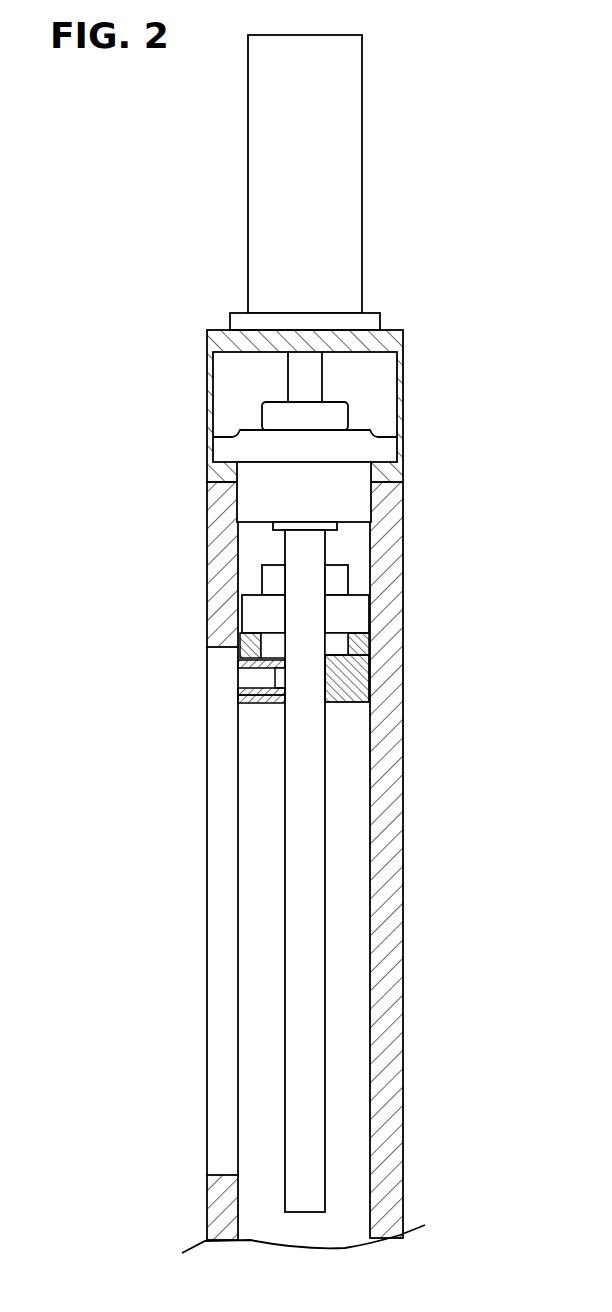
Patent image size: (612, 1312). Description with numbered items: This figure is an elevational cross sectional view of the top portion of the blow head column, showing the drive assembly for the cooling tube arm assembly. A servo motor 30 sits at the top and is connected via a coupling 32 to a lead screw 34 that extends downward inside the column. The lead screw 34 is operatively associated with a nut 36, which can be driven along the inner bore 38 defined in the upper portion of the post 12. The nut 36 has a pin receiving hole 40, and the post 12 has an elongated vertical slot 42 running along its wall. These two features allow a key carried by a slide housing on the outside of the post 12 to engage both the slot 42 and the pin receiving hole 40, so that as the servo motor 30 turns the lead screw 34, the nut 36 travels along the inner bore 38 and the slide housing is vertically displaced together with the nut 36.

The post 12 is at (403, 1026).
The servo motor 30 is at (315, 190).
The coupling 32 is at (353, 423).
The lead screw 34 is at (310, 1125).
The nut 36 is at (337, 621).
The inner bore 38 is at (358, 822).
The pin receiving hole 40 is at (257, 686).
The elongated vertical slot 42 is at (220, 948).